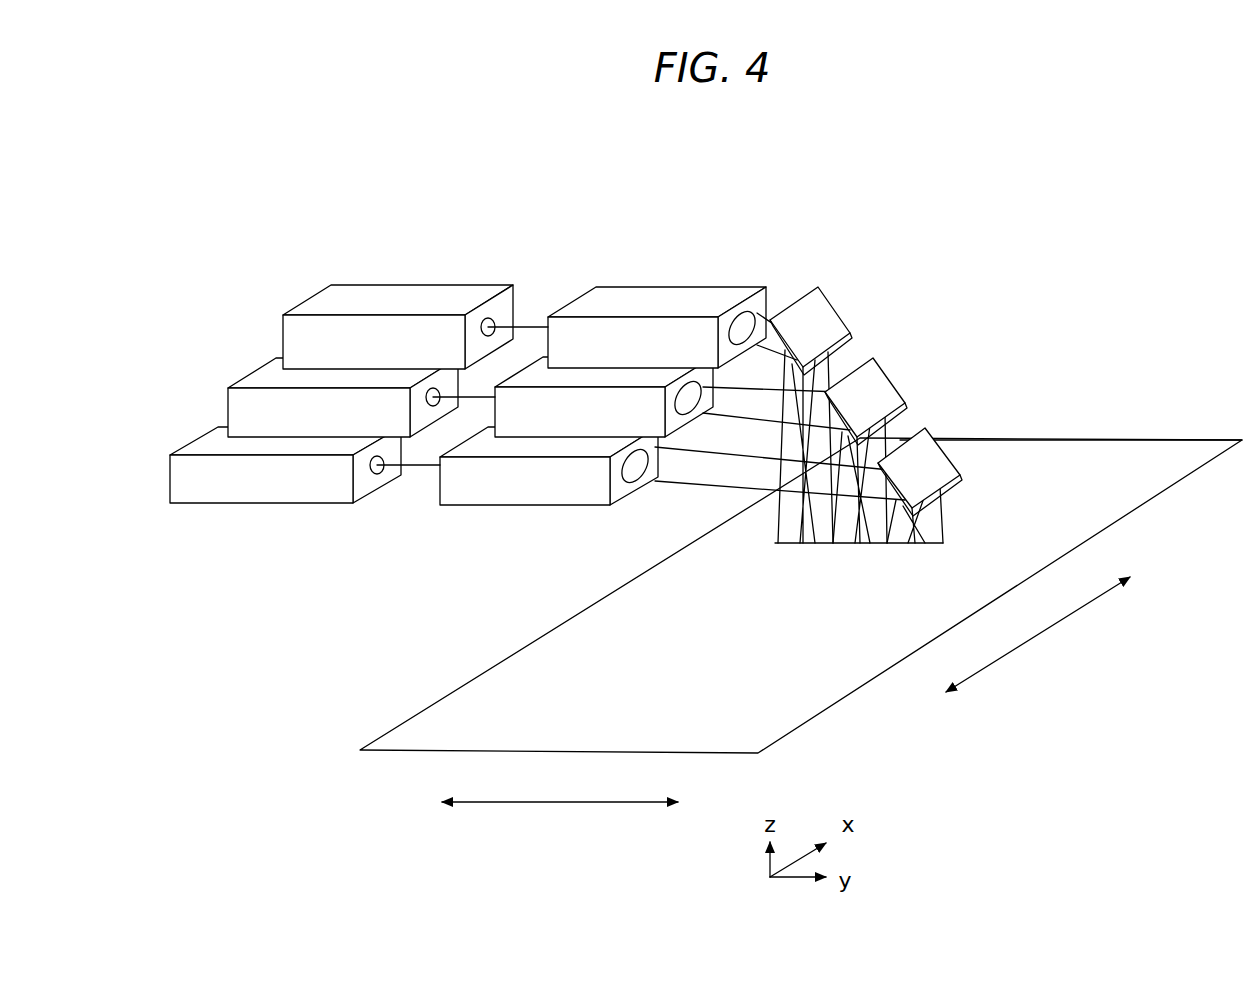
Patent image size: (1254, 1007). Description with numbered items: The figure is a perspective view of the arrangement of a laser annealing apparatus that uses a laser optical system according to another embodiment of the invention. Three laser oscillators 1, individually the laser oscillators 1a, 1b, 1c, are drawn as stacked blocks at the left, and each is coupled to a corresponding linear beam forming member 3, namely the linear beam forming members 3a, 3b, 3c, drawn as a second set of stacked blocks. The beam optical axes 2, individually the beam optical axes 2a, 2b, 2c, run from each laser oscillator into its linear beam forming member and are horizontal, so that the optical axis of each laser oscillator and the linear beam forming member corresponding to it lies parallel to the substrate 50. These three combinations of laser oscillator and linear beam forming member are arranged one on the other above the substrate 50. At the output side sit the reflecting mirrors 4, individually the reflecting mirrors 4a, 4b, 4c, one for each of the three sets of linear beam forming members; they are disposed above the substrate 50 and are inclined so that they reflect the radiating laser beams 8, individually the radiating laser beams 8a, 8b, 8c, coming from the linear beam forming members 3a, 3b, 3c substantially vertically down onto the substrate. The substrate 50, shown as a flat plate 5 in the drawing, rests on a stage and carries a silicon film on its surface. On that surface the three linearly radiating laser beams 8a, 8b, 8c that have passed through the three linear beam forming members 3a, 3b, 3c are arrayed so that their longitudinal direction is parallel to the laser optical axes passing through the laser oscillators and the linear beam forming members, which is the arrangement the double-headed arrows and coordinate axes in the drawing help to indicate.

The laser oscillators 1 is at (334, 341).
The laser oscillator 1a is at (323, 300).
The laser oscillator 1b is at (268, 370).
The laser oscillator 1c is at (217, 437).
The beam optical axes 2 is at (470, 369).
The beam optical axis 2a is at (543, 324).
The beam optical axis 2b is at (472, 400).
The beam optical axis 2c is at (427, 468).
The linear beam forming member 3 is at (603, 374).
The linear beam forming member 3a is at (720, 293).
The linear beam forming member 3b is at (602, 382).
The linear beam forming member 3c is at (577, 492).
The reflecting mirrors 4 is at (872, 372).
The reflecting mirror 4a is at (808, 306).
The reflecting mirror 4b is at (890, 380).
The reflecting mirror 4c is at (940, 458).
The recording medium 5 is at (1158, 457).
The substrate 50 is at (1064, 460).
The radiating laser beams 8 is at (821, 498).
The radiating laser beam 8a is at (818, 548).
The radiating laser beam 8b is at (873, 548).
The radiating laser beam 8c is at (935, 548).